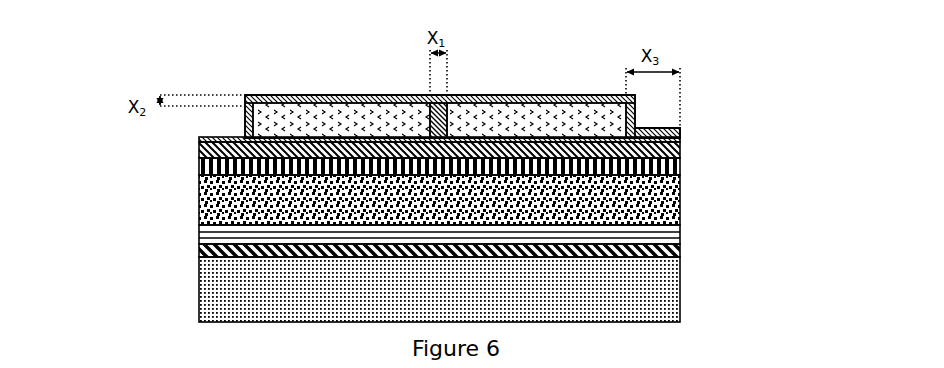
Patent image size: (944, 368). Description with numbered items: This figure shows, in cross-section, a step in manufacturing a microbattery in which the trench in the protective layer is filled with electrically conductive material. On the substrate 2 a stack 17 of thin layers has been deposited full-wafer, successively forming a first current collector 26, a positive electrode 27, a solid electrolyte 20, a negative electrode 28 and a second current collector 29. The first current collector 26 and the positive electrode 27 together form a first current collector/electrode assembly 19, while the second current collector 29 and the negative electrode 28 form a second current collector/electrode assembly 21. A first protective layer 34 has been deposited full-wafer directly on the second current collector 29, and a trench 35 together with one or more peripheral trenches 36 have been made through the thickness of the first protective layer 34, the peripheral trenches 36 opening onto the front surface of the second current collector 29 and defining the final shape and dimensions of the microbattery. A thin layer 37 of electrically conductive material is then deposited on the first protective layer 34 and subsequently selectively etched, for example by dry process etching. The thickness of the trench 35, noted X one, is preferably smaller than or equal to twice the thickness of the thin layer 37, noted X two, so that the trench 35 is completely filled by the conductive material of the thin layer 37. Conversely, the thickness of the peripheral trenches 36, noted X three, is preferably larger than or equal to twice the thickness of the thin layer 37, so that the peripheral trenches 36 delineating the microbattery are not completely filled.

The substrate 2 is at (650, 293).
The stack of thin layers 17 is at (702, 156).
The first current collector/electrode assembly 19 is at (471, 242).
The solid electrolyte 20 is at (199, 193).
The second current collector/electrode assembly 21 is at (471, 172).
The first current collector 26 is at (235, 257).
The positive electrode 27 is at (653, 237).
The negative electrode 28 is at (668, 163).
The second current collector 29 is at (199, 144).
The first protective layer 34 is at (552, 117).
The trench 35 is at (426, 118).
The peripheral trenches 36 is at (667, 119).
The thin layer of electrically conductive material 37 is at (302, 98).